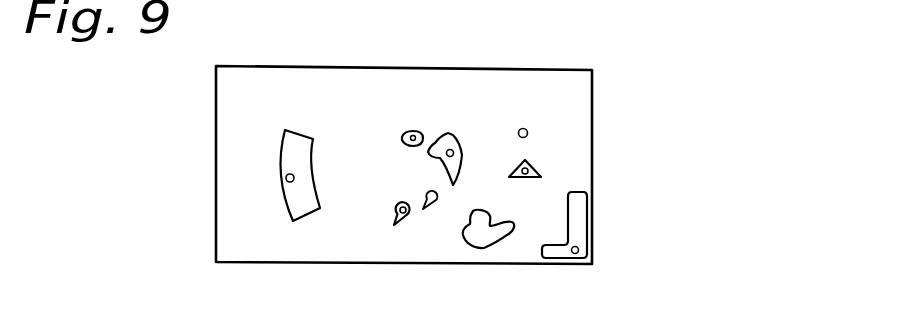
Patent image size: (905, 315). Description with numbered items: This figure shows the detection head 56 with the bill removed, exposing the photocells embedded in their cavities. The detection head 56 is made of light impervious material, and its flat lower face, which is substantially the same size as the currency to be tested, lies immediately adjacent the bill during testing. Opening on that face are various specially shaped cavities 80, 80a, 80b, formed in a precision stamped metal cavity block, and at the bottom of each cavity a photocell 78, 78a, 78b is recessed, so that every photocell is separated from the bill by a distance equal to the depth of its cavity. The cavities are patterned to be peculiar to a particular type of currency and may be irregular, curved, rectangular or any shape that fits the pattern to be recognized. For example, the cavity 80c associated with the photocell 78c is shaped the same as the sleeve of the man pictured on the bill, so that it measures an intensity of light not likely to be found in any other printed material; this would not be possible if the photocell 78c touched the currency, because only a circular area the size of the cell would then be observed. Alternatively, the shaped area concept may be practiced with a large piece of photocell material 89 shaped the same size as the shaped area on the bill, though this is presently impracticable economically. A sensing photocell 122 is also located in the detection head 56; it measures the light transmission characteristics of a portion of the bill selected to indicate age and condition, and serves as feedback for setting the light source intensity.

The detection head 56 is at (595, 162).
The photocell 78 is at (294, 181).
The photocell 78a is at (415, 136).
The photocell 78b is at (455, 151).
The photocell 78c is at (398, 211).
The shaped cavity 80 is at (322, 128).
The shaped cavity 80a is at (401, 139).
The shaped cavity 80b is at (459, 178).
The shaped cavity 80c is at (397, 228).
The photocell material 89 is at (482, 248).
The sensing photocell 122 is at (528, 131).